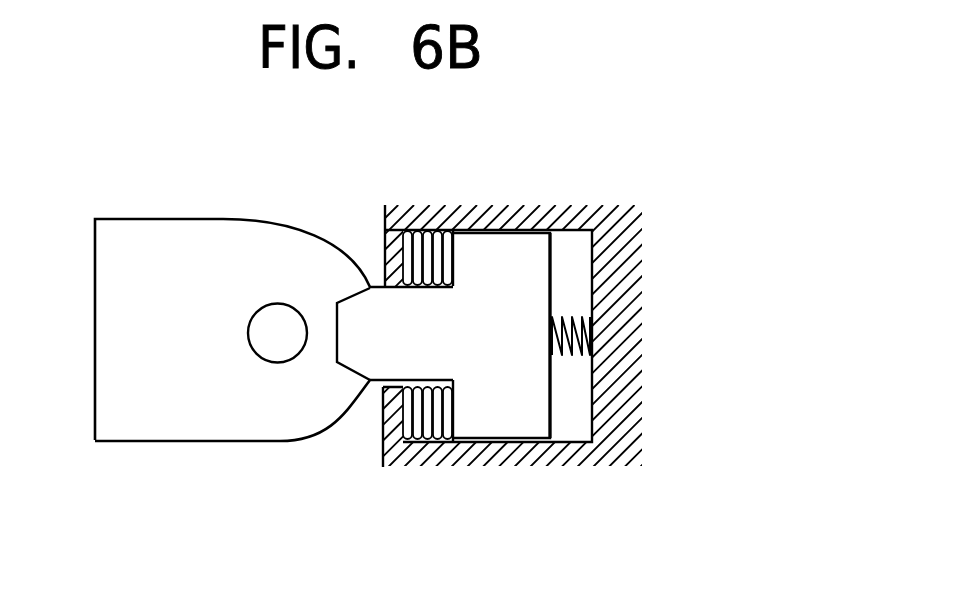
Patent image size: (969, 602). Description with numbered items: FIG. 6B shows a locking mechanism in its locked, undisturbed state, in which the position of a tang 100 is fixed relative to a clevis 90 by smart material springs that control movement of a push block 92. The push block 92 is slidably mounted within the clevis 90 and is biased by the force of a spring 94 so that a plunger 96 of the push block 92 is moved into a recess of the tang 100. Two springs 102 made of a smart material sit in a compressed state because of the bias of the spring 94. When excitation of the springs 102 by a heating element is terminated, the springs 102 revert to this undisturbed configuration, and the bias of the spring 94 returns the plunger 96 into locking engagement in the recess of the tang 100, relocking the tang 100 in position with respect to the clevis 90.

The clevis 90 is at (412, 212).
The push block 92 is at (505, 250).
The spring 94 is at (573, 335).
The plunger 96 is at (373, 353).
The tang 100 is at (133, 218).
The smart material springs 102 is at (413, 248).